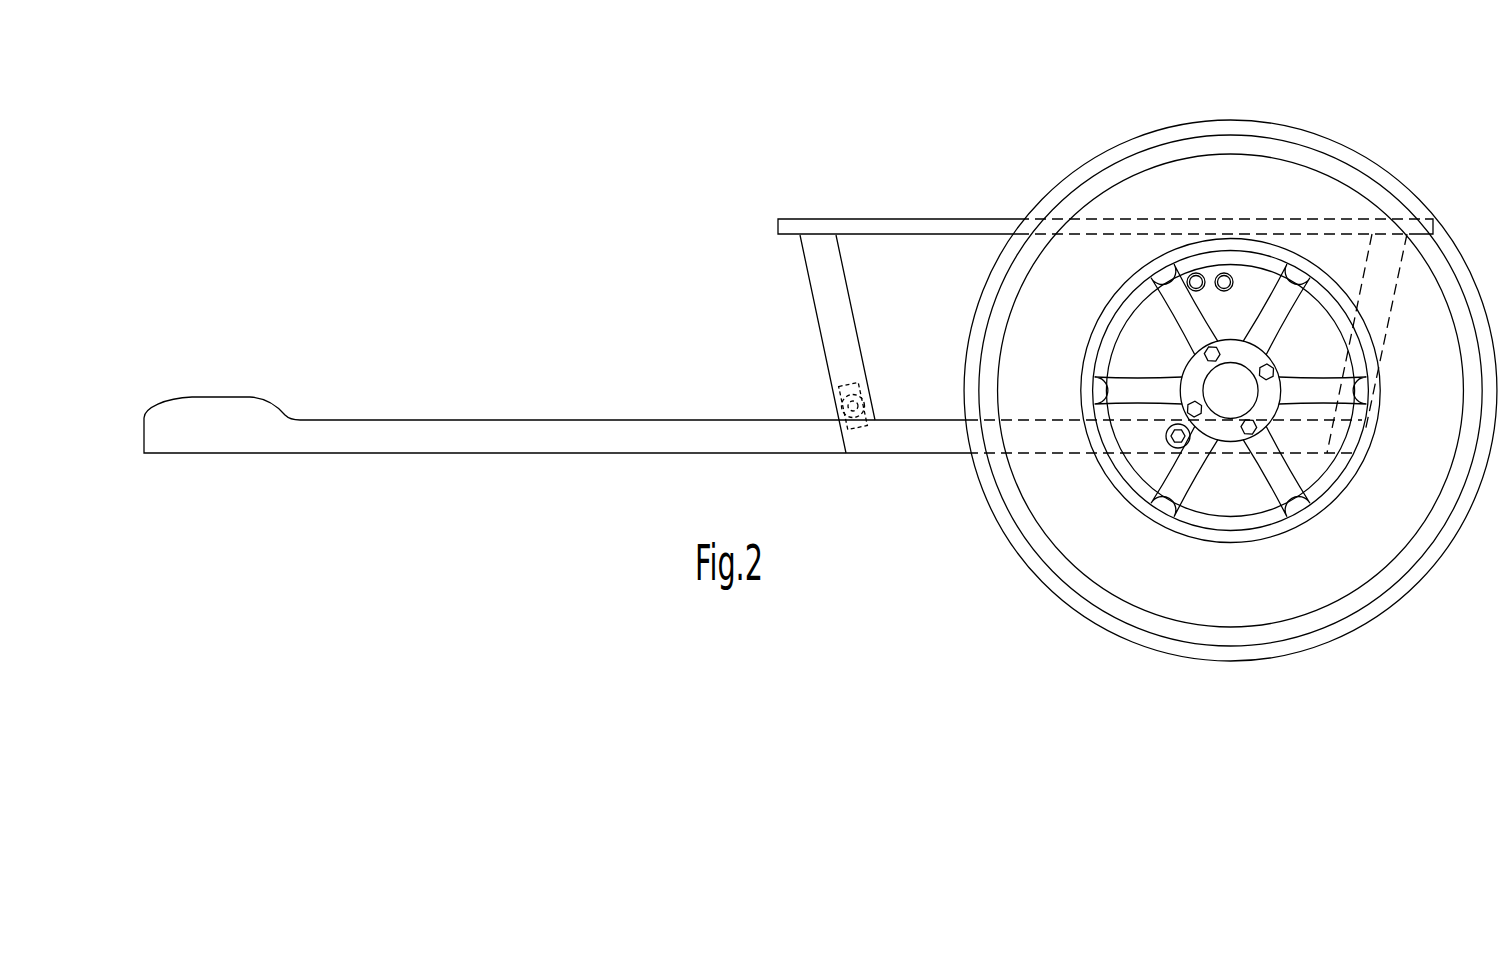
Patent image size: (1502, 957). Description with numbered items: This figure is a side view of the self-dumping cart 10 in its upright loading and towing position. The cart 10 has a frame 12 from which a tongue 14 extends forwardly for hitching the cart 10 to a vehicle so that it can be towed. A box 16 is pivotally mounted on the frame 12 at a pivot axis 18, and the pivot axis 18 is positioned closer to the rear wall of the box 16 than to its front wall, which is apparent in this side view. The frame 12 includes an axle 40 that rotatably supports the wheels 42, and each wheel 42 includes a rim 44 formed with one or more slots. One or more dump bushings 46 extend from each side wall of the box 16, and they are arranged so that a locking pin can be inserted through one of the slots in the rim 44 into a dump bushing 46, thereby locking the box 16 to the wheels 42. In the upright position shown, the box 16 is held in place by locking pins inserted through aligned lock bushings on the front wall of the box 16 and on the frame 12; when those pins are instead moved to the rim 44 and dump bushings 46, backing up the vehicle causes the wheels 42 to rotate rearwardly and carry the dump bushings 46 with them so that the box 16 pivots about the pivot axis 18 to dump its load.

The self-dumping cart 10 is at (900, 43).
The frame 12 is at (870, 438).
The tongue 14 is at (740, 430).
The box 16 is at (823, 307).
The pivot axis 18 is at (1175, 447).
The axle 40 is at (1232, 413).
The wheels 42 is at (1283, 132).
The rim 44 is at (1130, 303).
The dump bushings 46 is at (1223, 272).